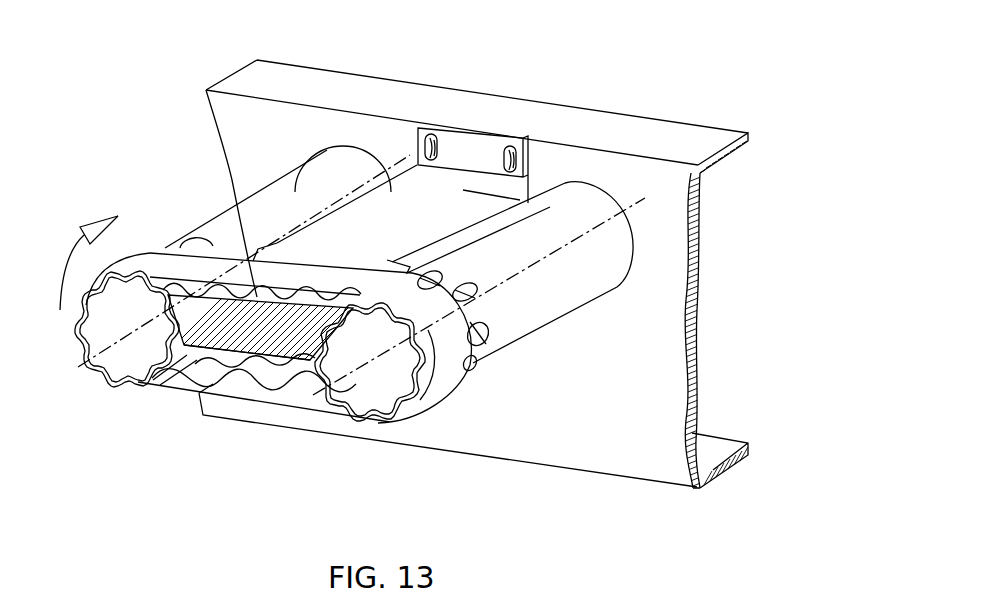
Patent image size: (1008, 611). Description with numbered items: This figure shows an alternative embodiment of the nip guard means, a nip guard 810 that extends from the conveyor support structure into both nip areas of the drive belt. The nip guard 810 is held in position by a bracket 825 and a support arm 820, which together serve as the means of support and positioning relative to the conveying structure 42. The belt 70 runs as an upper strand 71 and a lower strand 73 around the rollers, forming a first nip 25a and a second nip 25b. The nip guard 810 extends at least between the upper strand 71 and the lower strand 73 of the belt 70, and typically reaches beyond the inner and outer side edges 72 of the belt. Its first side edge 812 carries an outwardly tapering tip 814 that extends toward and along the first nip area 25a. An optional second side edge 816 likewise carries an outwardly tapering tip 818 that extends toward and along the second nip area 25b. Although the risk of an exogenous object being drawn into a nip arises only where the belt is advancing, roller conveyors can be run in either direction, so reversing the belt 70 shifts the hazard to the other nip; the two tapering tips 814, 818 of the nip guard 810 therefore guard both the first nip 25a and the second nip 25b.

The conveying structure 42 is at (672, 138).
The support arm 820 is at (548, 188).
The outwardly tapering tip 814 is at (330, 297).
The bracket 825 is at (468, 150).
The first side edge 812 is at (287, 292).
The upper strand 71 is at (230, 297).
The nip guard 810 is at (197, 297).
The second side edge 816 is at (173, 297).
The outwardly tapering tip 818 is at (157, 300).
The second nip 25b is at (142, 362).
The first nip 25a is at (372, 420).
The belt 70 is at (442, 347).
The inner and outer side edges 72 is at (277, 393).
The lower strand 73 is at (182, 385).